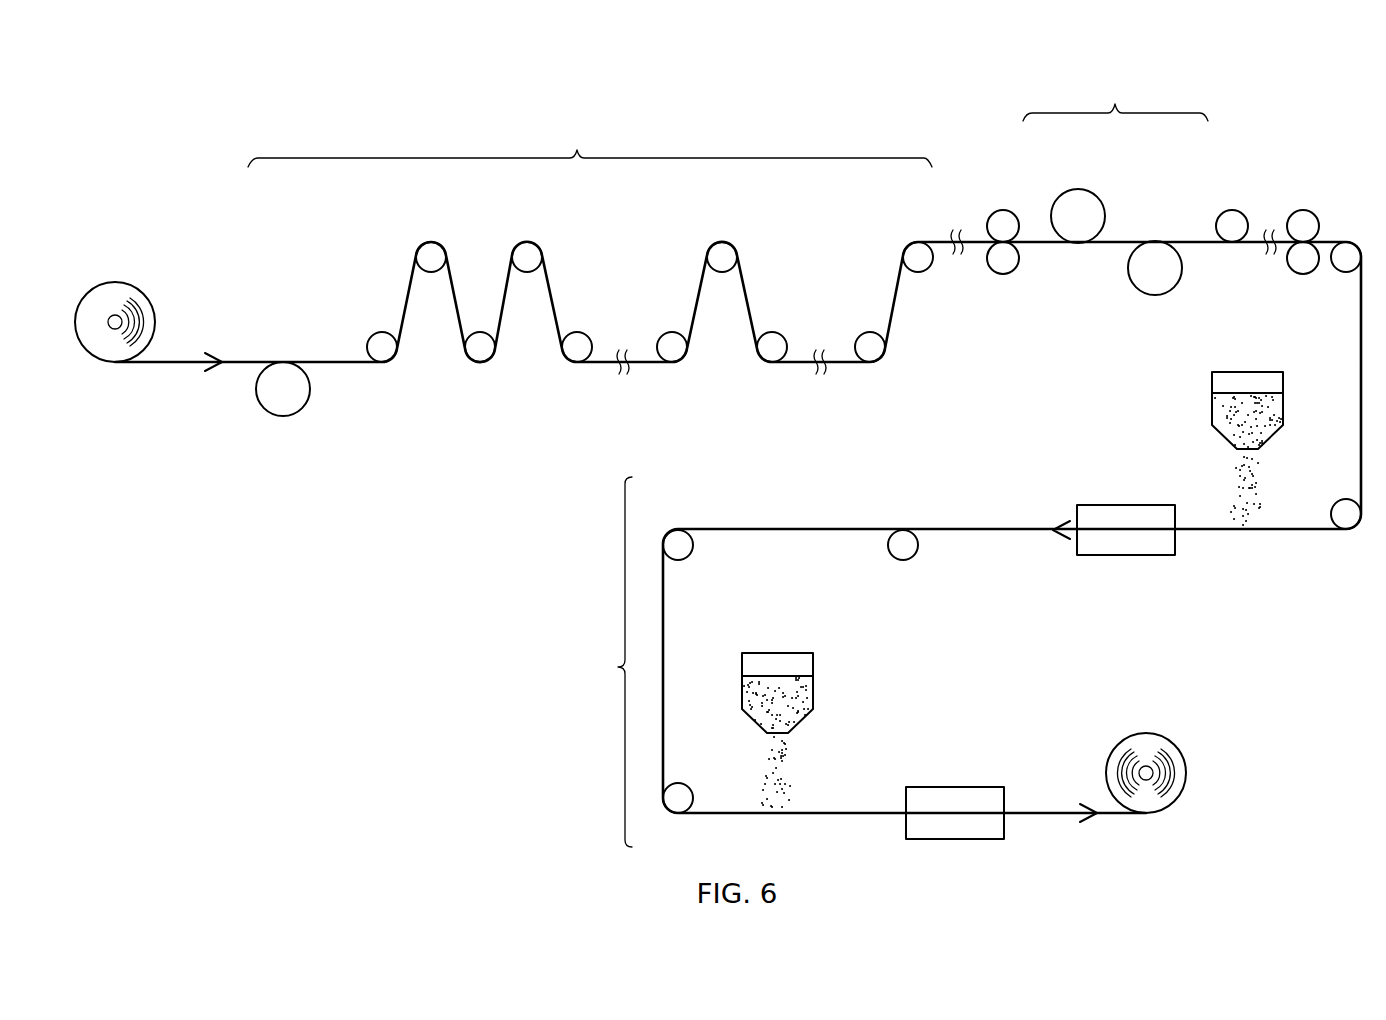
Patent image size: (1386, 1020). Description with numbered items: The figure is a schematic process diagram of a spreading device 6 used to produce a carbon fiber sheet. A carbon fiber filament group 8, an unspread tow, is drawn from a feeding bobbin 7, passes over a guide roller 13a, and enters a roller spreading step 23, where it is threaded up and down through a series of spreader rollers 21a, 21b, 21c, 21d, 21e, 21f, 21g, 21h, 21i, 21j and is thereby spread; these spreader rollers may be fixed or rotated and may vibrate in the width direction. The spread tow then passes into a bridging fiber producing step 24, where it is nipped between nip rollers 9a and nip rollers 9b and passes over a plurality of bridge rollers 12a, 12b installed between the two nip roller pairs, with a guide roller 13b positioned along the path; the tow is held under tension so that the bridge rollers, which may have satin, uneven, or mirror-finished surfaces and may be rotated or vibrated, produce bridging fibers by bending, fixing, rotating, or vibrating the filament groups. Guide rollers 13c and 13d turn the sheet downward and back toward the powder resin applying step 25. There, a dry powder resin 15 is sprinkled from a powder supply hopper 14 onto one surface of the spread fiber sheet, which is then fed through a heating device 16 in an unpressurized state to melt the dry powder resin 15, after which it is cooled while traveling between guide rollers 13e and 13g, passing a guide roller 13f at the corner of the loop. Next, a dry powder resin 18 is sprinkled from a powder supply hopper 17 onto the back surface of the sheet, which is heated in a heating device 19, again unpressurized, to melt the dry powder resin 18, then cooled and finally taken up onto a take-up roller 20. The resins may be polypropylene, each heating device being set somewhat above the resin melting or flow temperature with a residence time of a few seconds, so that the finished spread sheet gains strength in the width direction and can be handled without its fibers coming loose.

The spreading device 6 is at (222, 130).
The feeding bobbin 7 is at (110, 282).
The carbon fiber filament group 8 is at (325, 356).
The nip roller 9a is at (1003, 275).
The nip roller 9b is at (1303, 210).
The bridge roller 12a is at (1078, 189).
The bridge roller 12b is at (1155, 296).
The guide roller 13a is at (283, 418).
The guide roller 13b is at (1233, 210).
The guide roller 13c is at (1336, 274).
The guide roller 13d is at (1335, 499).
The guide roller 13e is at (905, 561).
The guide roller 13f is at (683, 561).
The guide roller 13g is at (682, 782).
The powder supply hopper 14 is at (1212, 379).
The dry powder resin 15 is at (1236, 470).
The heating device 16 is at (1128, 504).
The powder supply hopper 17 is at (813, 663).
The dry powder resin 18 is at (791, 772).
The heating device 19 is at (955, 786).
The take-up roller 20 is at (1146, 732).
The spreader roller 21a is at (377, 334).
The spreader roller 21b is at (431, 241).
The spreader roller 21c is at (480, 364).
The spreader roller 21d is at (527, 241).
The spreader roller 21e is at (569, 363).
The spreader roller 21f is at (686, 363).
The spreader roller 21g is at (722, 241).
The spreader roller 21h is at (760, 363).
The spreader roller 21i is at (879, 363).
The spreader roller 21j is at (910, 241).
The roller spreading step 23 is at (565, 142).
The bridging fiber producing step 24 is at (1101, 97).
The powder resin applying step 25 is at (578, 681).